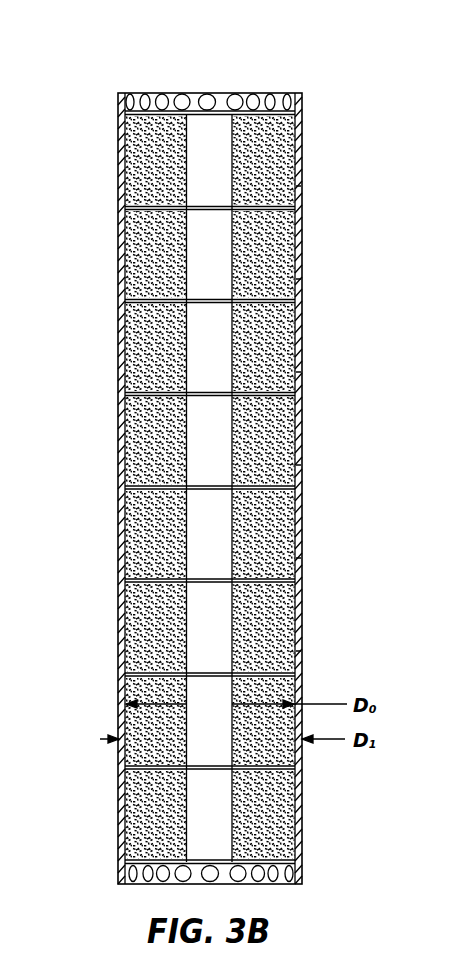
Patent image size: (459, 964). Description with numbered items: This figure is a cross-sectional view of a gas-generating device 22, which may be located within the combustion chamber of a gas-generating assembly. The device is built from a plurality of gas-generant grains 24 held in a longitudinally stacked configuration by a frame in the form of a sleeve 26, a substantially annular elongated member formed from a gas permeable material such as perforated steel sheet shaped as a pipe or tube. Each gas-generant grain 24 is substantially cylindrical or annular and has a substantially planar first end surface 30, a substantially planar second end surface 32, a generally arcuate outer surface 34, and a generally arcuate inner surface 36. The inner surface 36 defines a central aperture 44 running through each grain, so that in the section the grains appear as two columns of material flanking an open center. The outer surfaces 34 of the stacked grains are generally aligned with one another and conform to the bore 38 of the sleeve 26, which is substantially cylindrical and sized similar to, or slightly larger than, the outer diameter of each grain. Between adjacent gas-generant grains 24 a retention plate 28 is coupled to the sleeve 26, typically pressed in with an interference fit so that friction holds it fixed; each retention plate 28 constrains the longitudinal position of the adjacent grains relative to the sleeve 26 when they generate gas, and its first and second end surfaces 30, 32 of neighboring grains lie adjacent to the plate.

The gas-generating device 22 is at (362, 133).
The gas-generant grain 24 is at (150, 161).
The sleeve 26 is at (118, 100).
The retention plate 28 is at (118, 230).
The first end surface 30 is at (302, 227).
The second end surface 32 is at (302, 93).
The outer surface 34 is at (302, 145).
The inner surface 36 is at (188, 140).
The bore 38 is at (142, 95).
The central aperture 44 is at (208, 137).